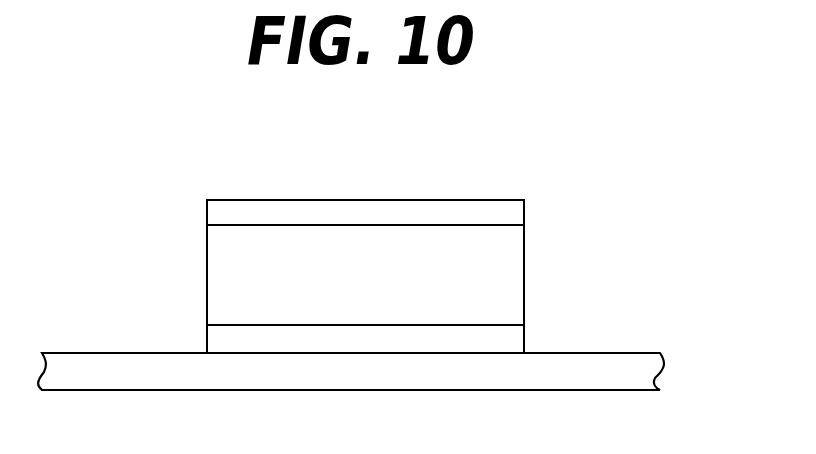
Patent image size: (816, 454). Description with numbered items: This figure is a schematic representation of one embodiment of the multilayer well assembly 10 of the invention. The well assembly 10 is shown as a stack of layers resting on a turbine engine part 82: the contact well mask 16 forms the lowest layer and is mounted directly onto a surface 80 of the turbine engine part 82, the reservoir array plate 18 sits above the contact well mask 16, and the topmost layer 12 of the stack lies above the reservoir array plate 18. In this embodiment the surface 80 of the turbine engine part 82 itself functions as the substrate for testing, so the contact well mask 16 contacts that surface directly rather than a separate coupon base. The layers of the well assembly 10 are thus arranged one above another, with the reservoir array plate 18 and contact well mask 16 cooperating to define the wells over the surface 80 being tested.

The well assembly 10 is at (572, 227).
The top layer 12 is at (400, 200).
The contact well mask 16 is at (524, 340).
The reservoir array plate 18 is at (524, 278).
The surface 80 is at (640, 353).
The turbine engine part 82 is at (379, 383).